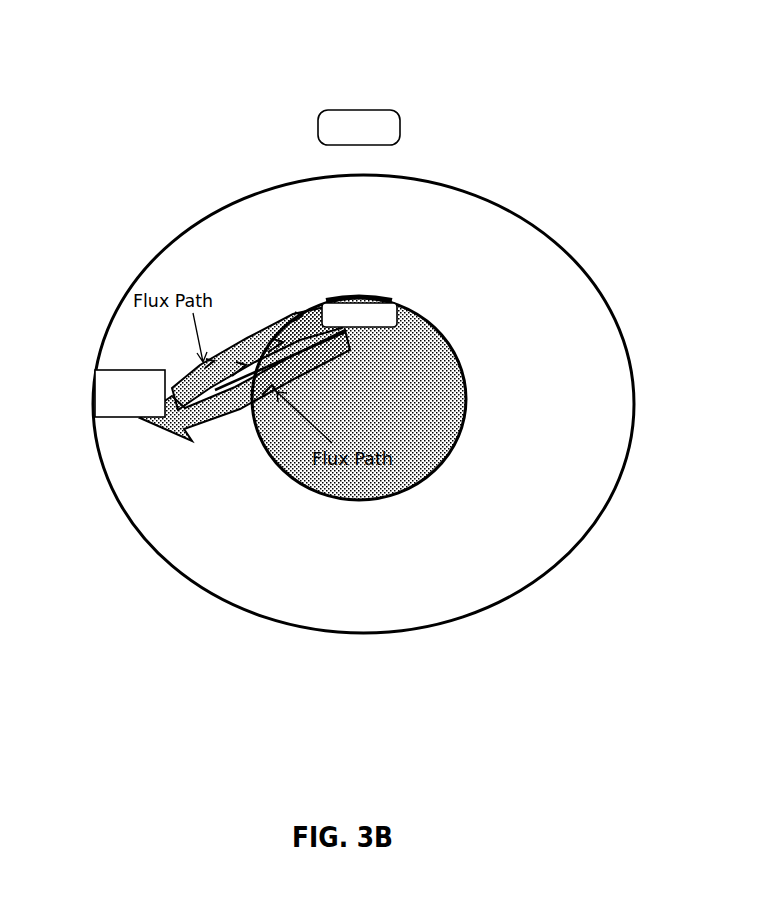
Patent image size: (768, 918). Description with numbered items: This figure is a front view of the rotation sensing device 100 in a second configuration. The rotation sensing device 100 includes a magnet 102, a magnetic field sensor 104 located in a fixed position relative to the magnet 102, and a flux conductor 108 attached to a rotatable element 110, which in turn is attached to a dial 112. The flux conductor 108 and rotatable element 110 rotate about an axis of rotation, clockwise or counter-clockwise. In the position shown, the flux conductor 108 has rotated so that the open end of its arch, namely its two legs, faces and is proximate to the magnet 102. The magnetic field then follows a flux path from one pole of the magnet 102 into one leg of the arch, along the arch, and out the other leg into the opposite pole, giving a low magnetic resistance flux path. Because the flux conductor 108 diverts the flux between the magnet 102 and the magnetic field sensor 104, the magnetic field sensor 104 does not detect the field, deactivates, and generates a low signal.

The rotation sensing device 100 is at (623, 214).
The magnet 102 is at (130, 393).
The magnetic field sensor 104 is at (359, 127).
The flux conductor 108 is at (205, 192).
The rotatable element 110 is at (359, 399).
The dial 112 is at (363, 404).